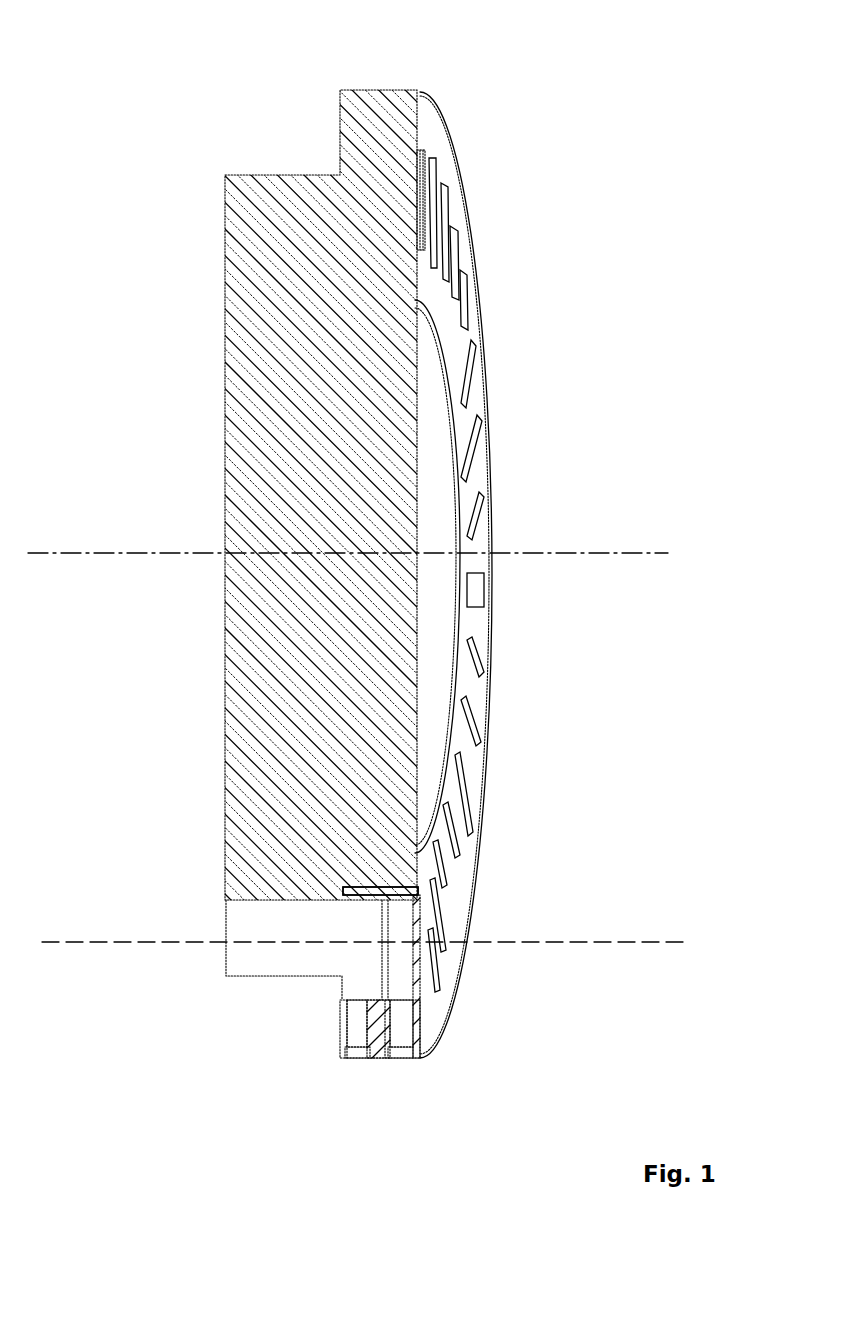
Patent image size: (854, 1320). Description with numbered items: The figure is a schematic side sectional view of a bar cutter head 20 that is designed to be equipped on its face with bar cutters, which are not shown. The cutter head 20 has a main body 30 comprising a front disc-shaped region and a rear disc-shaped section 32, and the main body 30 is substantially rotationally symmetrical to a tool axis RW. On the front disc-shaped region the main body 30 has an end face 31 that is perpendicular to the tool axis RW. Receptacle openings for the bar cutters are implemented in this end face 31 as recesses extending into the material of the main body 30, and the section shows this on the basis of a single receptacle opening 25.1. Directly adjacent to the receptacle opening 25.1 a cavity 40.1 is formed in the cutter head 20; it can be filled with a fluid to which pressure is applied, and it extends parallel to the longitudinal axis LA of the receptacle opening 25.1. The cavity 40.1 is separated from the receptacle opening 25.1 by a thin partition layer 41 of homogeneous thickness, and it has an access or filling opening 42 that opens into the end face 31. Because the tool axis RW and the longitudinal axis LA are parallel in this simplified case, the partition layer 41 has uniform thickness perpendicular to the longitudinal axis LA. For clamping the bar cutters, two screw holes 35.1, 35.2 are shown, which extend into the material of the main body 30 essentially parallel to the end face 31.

The bar cutter head 20 is at (110, 79).
The main body 30 is at (417, 95).
The end face 31 is at (470, 325).
The rear disc-shaped section 32 is at (232, 185).
The cavity 40.1 is at (350, 891).
The filling opening 42 is at (418, 889).
The receptacle opening 25.1 is at (403, 925).
The partition layer 41 is at (362, 899).
The screw hole 35.1 is at (350, 1060).
The screw hole 35.2 is at (410, 1060).
The tool axis RW is at (373, 554).
The longitudinal axis LA is at (387, 947).